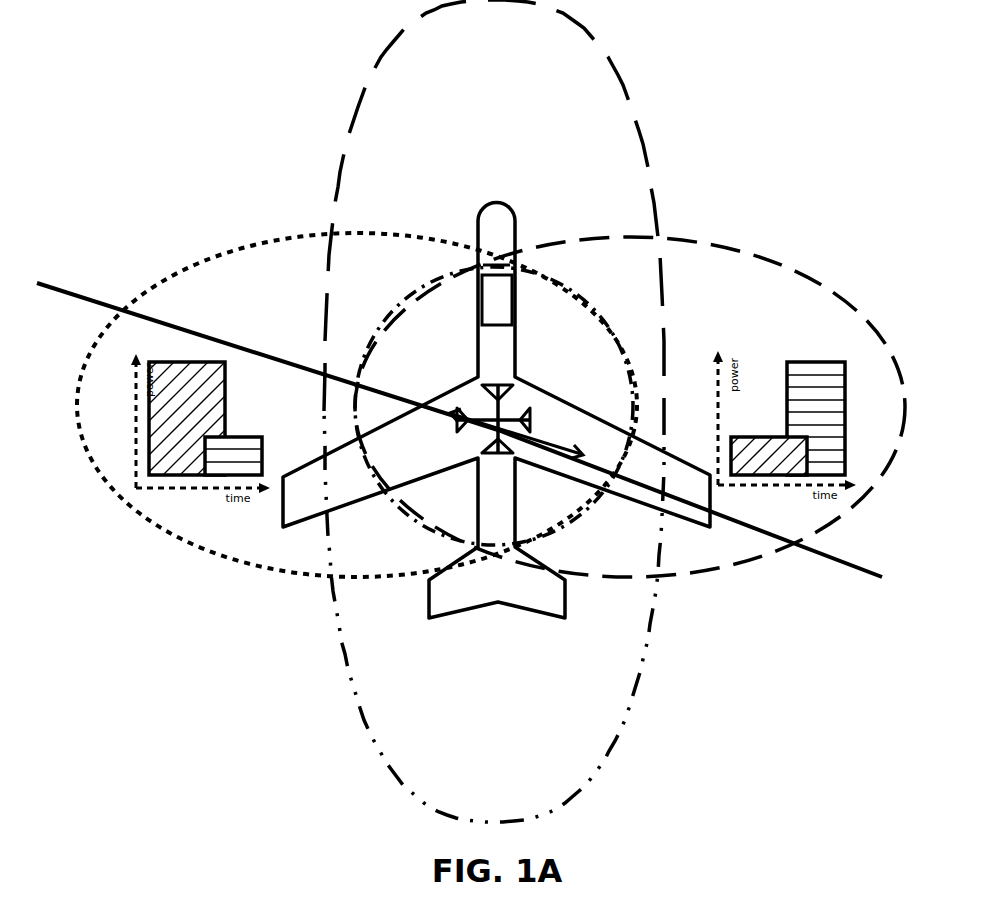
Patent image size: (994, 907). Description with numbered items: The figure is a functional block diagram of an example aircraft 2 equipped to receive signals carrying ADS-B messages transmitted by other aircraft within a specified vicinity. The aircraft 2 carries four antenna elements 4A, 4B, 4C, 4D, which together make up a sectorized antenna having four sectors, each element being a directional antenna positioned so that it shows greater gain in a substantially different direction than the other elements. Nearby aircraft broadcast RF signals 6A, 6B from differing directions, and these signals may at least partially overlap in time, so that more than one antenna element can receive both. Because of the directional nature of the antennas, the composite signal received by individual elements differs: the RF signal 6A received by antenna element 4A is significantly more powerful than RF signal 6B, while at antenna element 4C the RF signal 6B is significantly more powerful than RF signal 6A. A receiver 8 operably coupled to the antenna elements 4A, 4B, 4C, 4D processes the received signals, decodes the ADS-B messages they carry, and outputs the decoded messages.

The aircraft 2 is at (510, 206).
The receiver 8 is at (489, 312).
The antenna element 4A is at (462, 410).
The antenna element 4B is at (502, 383).
The antenna element 4C is at (533, 406).
The antenna element 4D is at (491, 460).
The RF signal 6A is at (55, 288).
The RF signal 6B is at (239, 435).